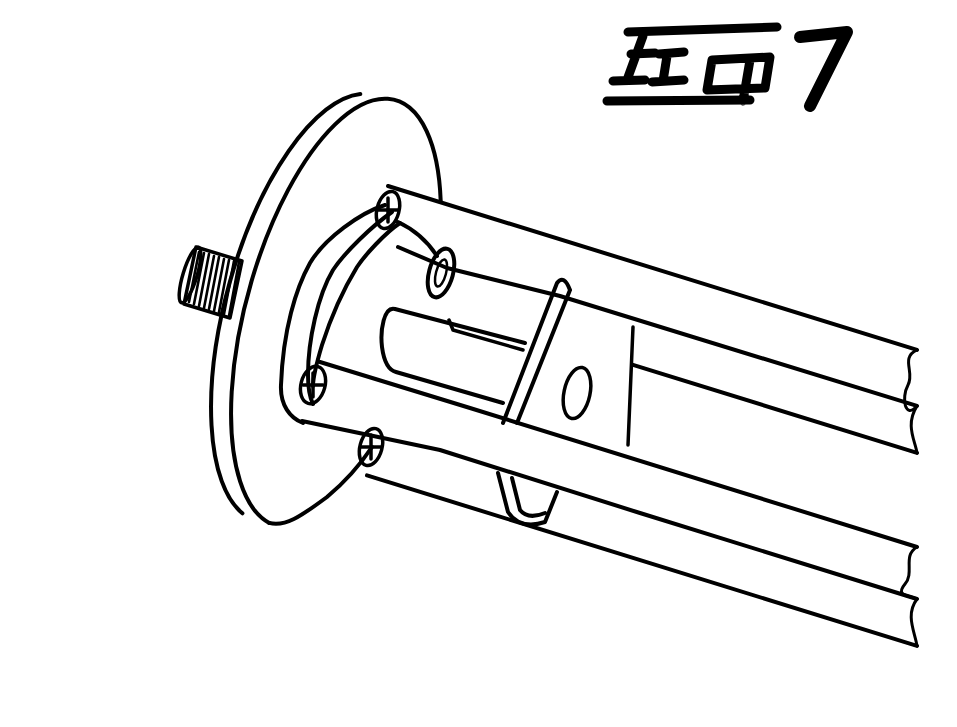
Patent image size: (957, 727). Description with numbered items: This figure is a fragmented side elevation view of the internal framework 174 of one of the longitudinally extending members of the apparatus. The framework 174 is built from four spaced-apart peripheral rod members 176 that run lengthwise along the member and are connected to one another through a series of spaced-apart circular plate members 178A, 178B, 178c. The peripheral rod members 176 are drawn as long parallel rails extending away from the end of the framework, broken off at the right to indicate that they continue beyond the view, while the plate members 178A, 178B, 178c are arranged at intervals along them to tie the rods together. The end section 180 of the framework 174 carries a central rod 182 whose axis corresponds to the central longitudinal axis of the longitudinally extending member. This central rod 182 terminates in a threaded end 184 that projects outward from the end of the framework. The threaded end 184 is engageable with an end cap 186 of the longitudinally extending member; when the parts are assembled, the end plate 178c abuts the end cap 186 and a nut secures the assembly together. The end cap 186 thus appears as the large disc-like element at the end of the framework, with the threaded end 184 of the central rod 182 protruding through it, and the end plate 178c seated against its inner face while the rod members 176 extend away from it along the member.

The internal framework 174 is at (704, 262).
The peripheral rod members 176 is at (722, 322).
The circular plate member 178A is at (537, 497).
The circular plate member 178B is at (402, 275).
The end plate 178c is at (345, 212).
The end section 180 is at (334, 477).
The central rod 182 is at (456, 358).
The threaded end 184 is at (187, 267).
The end cap 186 is at (293, 147).